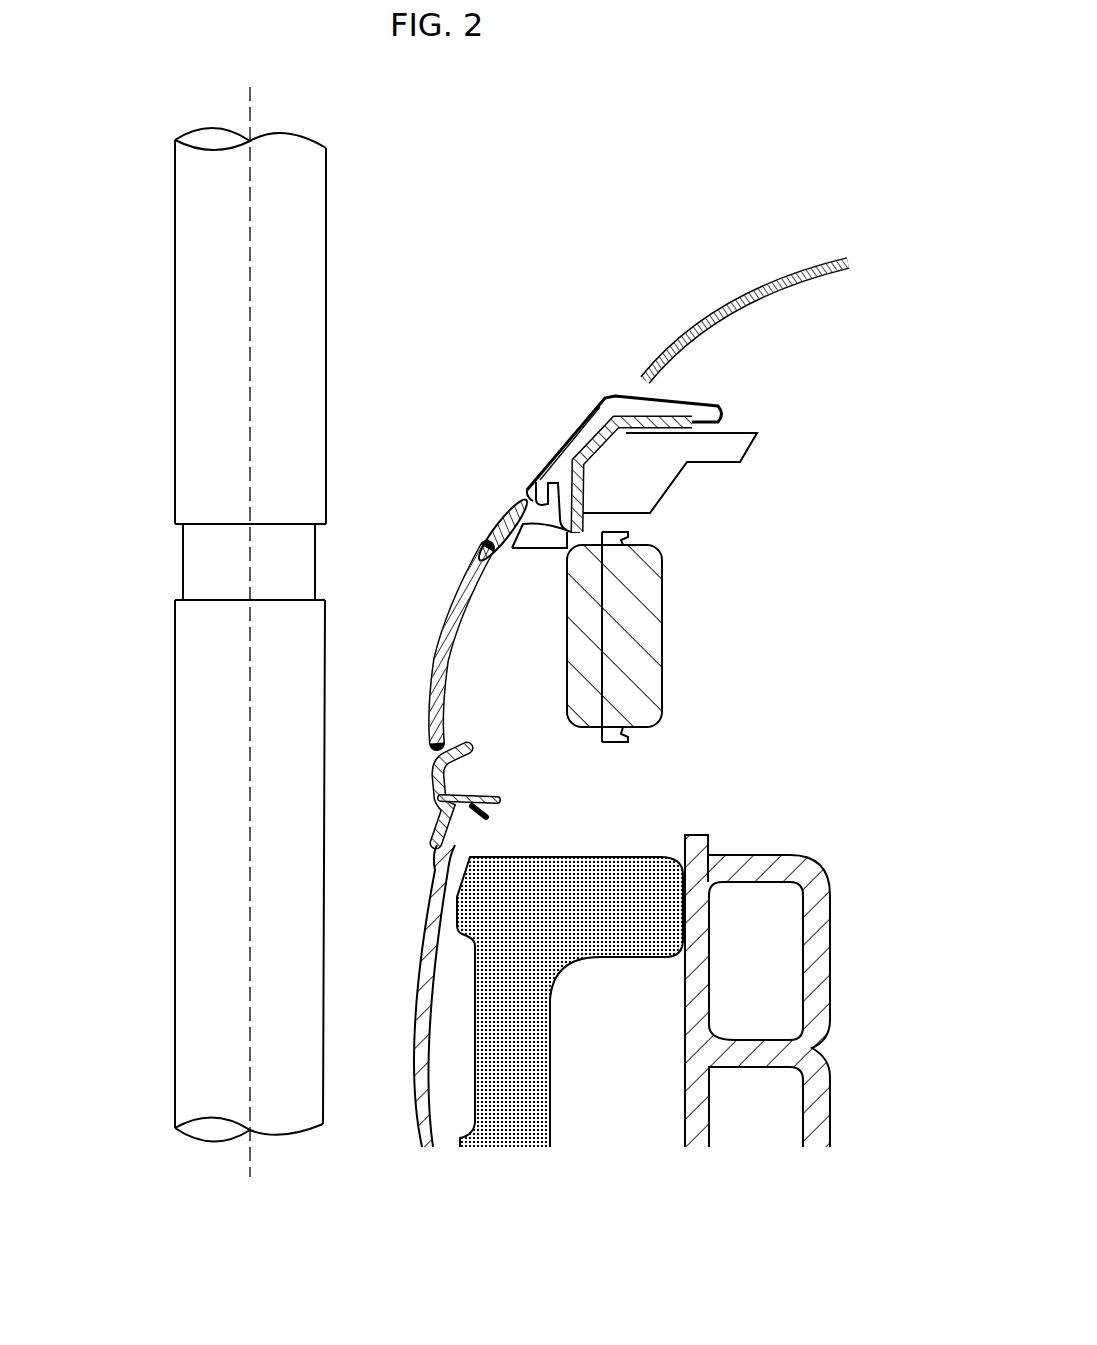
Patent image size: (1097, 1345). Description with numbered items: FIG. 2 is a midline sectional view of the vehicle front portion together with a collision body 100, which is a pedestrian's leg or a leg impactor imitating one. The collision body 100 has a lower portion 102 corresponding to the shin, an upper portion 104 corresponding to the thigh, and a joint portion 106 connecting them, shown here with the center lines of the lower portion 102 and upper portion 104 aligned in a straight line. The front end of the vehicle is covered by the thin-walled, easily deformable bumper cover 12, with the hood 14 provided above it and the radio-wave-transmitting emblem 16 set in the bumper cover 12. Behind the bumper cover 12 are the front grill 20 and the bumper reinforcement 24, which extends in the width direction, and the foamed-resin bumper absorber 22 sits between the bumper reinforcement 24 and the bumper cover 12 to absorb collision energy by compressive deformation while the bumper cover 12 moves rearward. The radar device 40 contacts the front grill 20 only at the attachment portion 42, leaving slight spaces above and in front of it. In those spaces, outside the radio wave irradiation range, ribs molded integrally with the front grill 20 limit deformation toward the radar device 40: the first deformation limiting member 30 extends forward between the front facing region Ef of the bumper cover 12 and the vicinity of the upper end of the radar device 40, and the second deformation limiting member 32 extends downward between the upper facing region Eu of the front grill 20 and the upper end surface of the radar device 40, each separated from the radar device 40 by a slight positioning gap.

The collision body 100 is at (255, 632).
The lower portion 102 is at (208, 880).
The upper portion 104 is at (193, 343).
The joint portion 106 is at (192, 572).
The bumper cover 12 is at (419, 1104).
The hood 14 is at (766, 278).
The emblem 16 is at (441, 657).
The front grill 20 is at (582, 405).
The bumper absorber 22 is at (510, 1137).
The bumper reinforcement 24 is at (760, 857).
The first deformation limiting member 30 is at (538, 548).
The second deformation limiting member 32 is at (665, 486).
The radar device 40 is at (644, 652).
The attachment portion 42 is at (566, 668).
The front facing region Ef is at (485, 525).
The upper facing region Eu is at (658, 413).